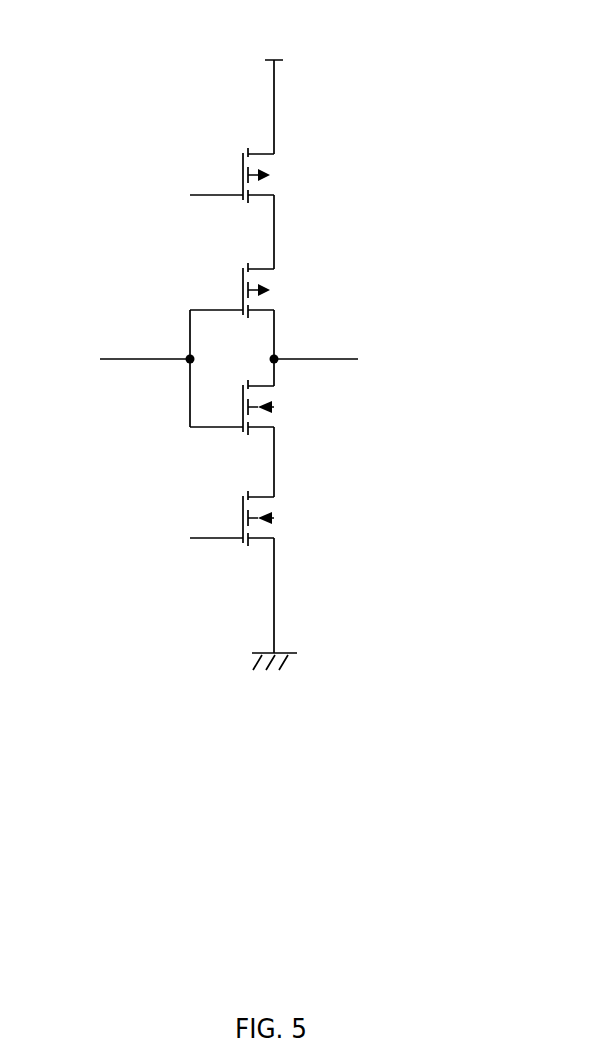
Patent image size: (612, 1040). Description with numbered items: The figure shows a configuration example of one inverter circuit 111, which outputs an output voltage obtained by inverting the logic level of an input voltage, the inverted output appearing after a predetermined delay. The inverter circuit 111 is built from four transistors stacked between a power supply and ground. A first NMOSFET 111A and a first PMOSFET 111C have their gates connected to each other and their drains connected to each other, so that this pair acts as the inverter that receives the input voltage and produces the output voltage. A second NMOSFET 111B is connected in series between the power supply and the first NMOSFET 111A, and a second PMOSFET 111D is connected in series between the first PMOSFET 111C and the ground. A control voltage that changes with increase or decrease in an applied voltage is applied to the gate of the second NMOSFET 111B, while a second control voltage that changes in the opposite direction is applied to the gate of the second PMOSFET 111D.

The inverter circuit 111 is at (248, 340).
The first NMOSFET 111A is at (276, 290).
The second NMOSFET 111B is at (276, 175).
The first PMOSFET 111C is at (277, 407).
The second PMOSFET 111D is at (276, 518).